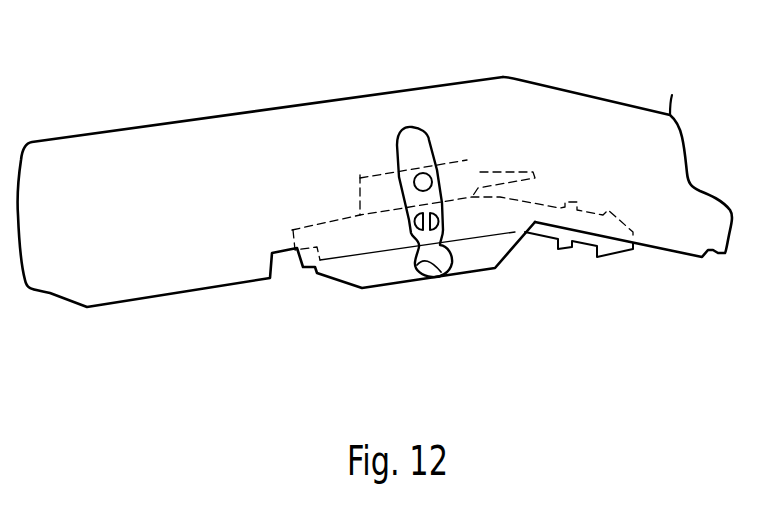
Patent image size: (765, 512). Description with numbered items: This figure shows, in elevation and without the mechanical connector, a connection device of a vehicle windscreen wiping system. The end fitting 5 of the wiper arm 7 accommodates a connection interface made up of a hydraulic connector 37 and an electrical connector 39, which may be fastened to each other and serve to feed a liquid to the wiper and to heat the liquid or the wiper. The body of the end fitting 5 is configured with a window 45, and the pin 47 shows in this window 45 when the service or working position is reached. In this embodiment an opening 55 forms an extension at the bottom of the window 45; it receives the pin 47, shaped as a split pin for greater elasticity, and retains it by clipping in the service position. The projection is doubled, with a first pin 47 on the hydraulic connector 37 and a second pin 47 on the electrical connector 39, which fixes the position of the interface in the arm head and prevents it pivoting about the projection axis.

The end fitting 5 is at (266, 110).
The wiper arm 7 is at (621, 104).
The hydraulic connector 37 is at (577, 246).
The electrical connector 39 is at (473, 163).
The window 45 is at (431, 143).
The pin 47 is at (408, 212).
The opening 55 is at (438, 270).